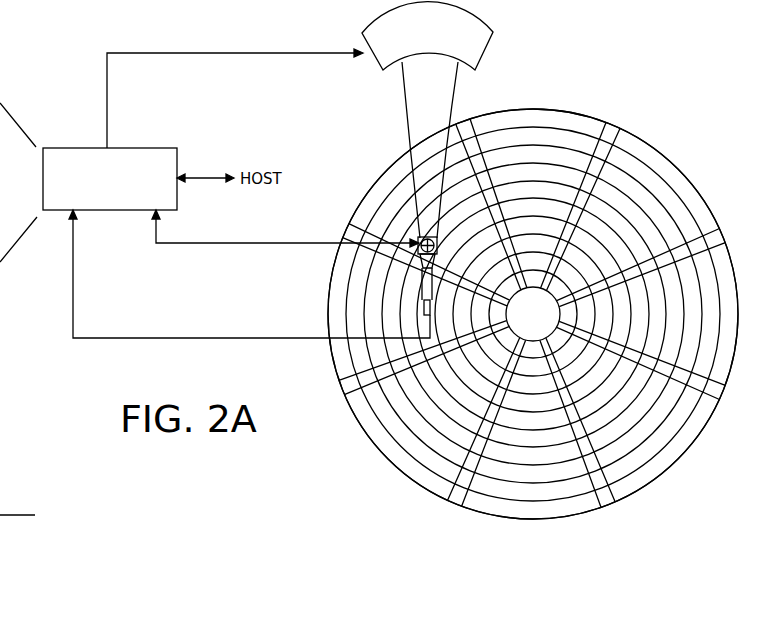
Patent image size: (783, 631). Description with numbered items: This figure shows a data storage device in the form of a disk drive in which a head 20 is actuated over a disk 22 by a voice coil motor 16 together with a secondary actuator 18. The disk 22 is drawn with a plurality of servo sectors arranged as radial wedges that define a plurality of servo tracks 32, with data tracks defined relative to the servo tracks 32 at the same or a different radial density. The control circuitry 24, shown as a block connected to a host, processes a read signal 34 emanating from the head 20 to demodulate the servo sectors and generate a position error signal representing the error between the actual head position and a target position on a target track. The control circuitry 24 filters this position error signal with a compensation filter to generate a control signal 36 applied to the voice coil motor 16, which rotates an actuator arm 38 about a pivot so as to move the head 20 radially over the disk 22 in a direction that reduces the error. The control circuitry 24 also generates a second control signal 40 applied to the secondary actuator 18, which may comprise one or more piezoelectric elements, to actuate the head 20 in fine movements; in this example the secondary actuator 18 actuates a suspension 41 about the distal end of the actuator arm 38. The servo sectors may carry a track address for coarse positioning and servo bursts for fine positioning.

The voice coil motor 16 is at (376, 69).
The secondary actuator 18 is at (443, 243).
The head 20 is at (415, 302).
The disk 22 is at (682, 151).
The control circuitry 24 is at (148, 148).
The servo tracks 32 is at (536, 135).
The read signal 34 is at (204, 338).
The control signal 36 is at (107, 107).
The actuator arm 38 is at (410, 133).
The control signal 40 is at (256, 243).
The suspension 41 is at (441, 292).